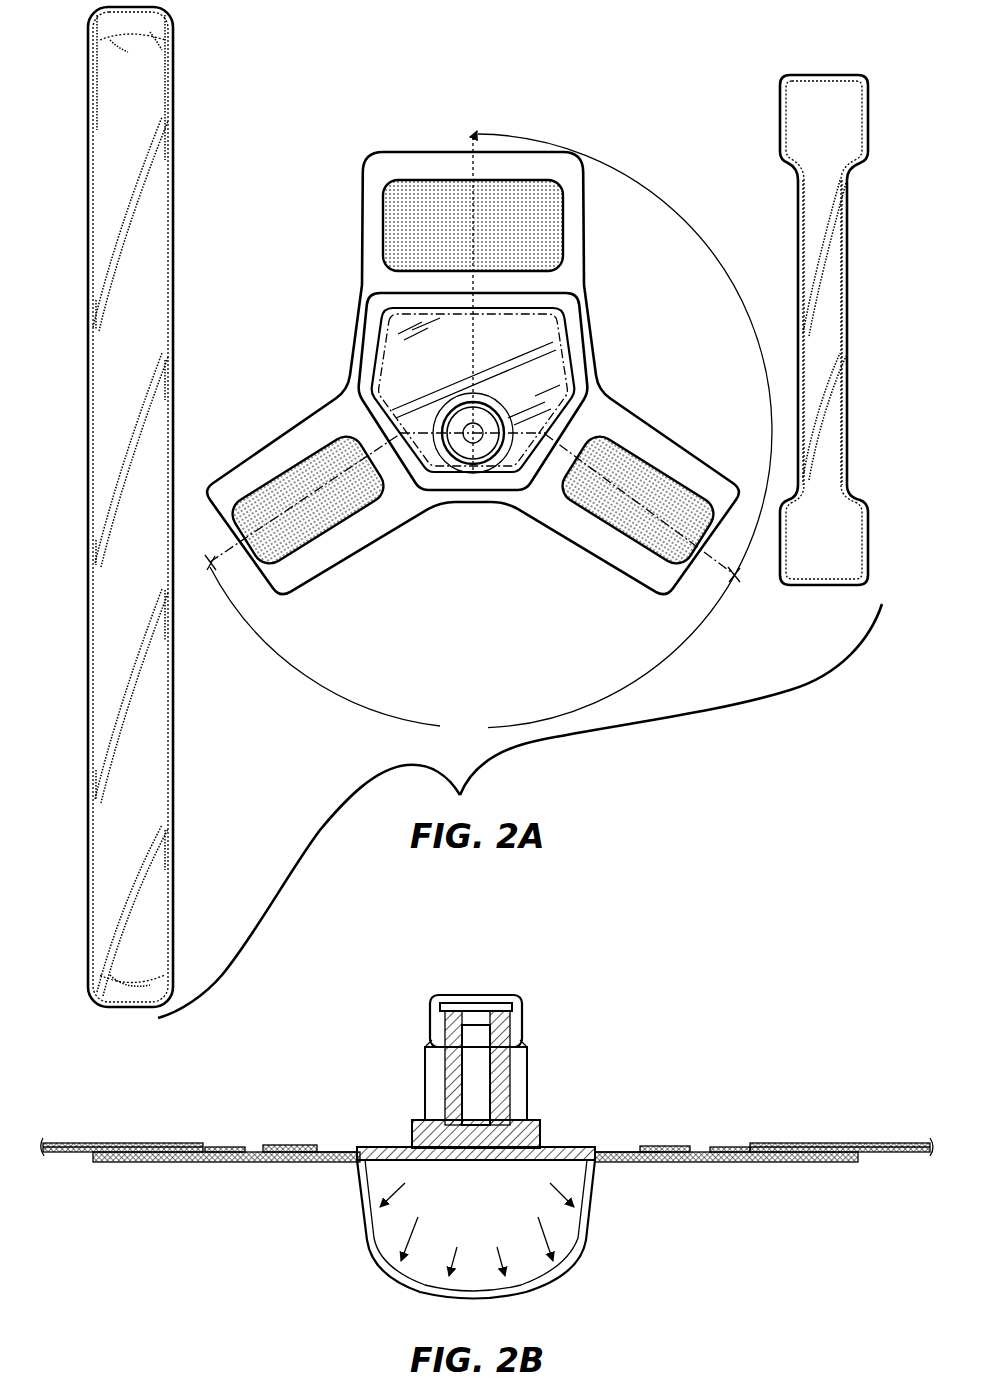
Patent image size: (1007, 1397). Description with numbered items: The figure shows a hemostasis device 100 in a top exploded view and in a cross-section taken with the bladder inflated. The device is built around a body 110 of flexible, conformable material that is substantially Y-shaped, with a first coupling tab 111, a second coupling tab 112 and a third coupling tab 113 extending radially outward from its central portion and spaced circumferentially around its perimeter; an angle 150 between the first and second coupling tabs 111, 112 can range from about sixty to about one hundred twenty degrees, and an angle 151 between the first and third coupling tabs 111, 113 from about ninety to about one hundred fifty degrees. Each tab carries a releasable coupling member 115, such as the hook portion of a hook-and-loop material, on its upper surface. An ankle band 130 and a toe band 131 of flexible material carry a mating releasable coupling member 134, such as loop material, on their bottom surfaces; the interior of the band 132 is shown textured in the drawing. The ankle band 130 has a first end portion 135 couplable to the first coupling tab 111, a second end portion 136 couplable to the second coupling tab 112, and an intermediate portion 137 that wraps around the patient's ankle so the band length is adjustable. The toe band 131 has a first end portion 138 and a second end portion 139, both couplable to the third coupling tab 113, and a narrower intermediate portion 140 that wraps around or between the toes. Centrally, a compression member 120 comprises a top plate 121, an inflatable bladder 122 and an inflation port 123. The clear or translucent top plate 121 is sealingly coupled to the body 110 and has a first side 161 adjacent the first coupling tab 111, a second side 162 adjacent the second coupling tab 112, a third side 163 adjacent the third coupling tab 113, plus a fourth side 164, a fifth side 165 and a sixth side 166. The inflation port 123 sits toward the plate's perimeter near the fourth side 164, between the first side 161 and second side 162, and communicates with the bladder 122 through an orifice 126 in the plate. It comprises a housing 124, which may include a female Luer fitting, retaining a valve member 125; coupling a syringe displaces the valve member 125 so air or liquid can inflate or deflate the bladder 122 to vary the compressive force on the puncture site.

In FIG. 2A, the assembly 100 is at (648, 252).
In FIG. 2A, the body 110 is at (363, 272).
In FIG. 2B, the body 110 is at (665, 1143).
In FIG. 2A, the first coupling tab 111 is at (652, 590).
In FIG. 2B, the first coupling tab 111 is at (767, 1165).
In FIG. 2A, the second coupling tab 112 is at (306, 578).
In FIG. 2B, the second coupling tab 112 is at (152, 1164).
In FIG. 2A, the third coupling tab 113 is at (448, 155).
In FIG. 2A, the releasable coupling member 115 is at (408, 196).
In FIG. 2B, the releasable coupling member 115 is at (238, 1146).
In FIG. 2A, the compression member 120 is at (552, 375).
In FIG. 2B, the compression member 120 is at (556, 1133).
In FIG. 2A, the top plate 121 is at (577, 396).
In FIG. 2B, the top plate 121 is at (395, 1148).
In FIG. 2B, the inflatable bladder 122 is at (596, 1228).
In FIG. 2A, the inflation port 123 is at (468, 474).
In FIG. 2B, the inflation port 123 is at (526, 1020).
In FIG. 2B, the housing 124 is at (432, 1020).
In FIG. 2B, the valve member 125 is at (502, 1081).
In FIG. 2B, the orifice 126 is at (478, 1160).
In FIG. 2A, the ankle band 130 is at (84, 246).
In FIG. 2B, the ankle band 130 is at (90, 1144).
In FIG. 2A, the toe band 131 is at (850, 216).
In FIG. 2A, the strap body 132 is at (840, 378).
In FIG. 2A, the releasable coupling member 134 is at (100, 400).
In FIG. 2B, the releasable coupling member 134 is at (66, 1161).
In FIG. 2A, the first end portion 135 is at (174, 46).
In FIG. 2A, the second end portion 136 is at (174, 960).
In FIG. 2A, the intermediate portion 137 is at (174, 493).
In FIG. 2A, the first end portion 138 is at (870, 110).
In FIG. 2A, the second end portion 139 is at (870, 542).
In FIG. 2A, the intermediate portion 140 is at (848, 283).
In FIG. 2A, the angle 150 is at (491, 437).
In FIG. 2A, the angle 151 is at (748, 270).
In FIG. 2A, the first side 161 is at (583, 420).
In FIG. 2A, the second side 162 is at (355, 425).
In FIG. 2A, the third side 163 is at (406, 291).
In FIG. 2A, the fourth side 164 is at (503, 478).
In FIG. 2A, the fifth side 165 is at (560, 328).
In FIG. 2A, the sixth side 166 is at (384, 322).